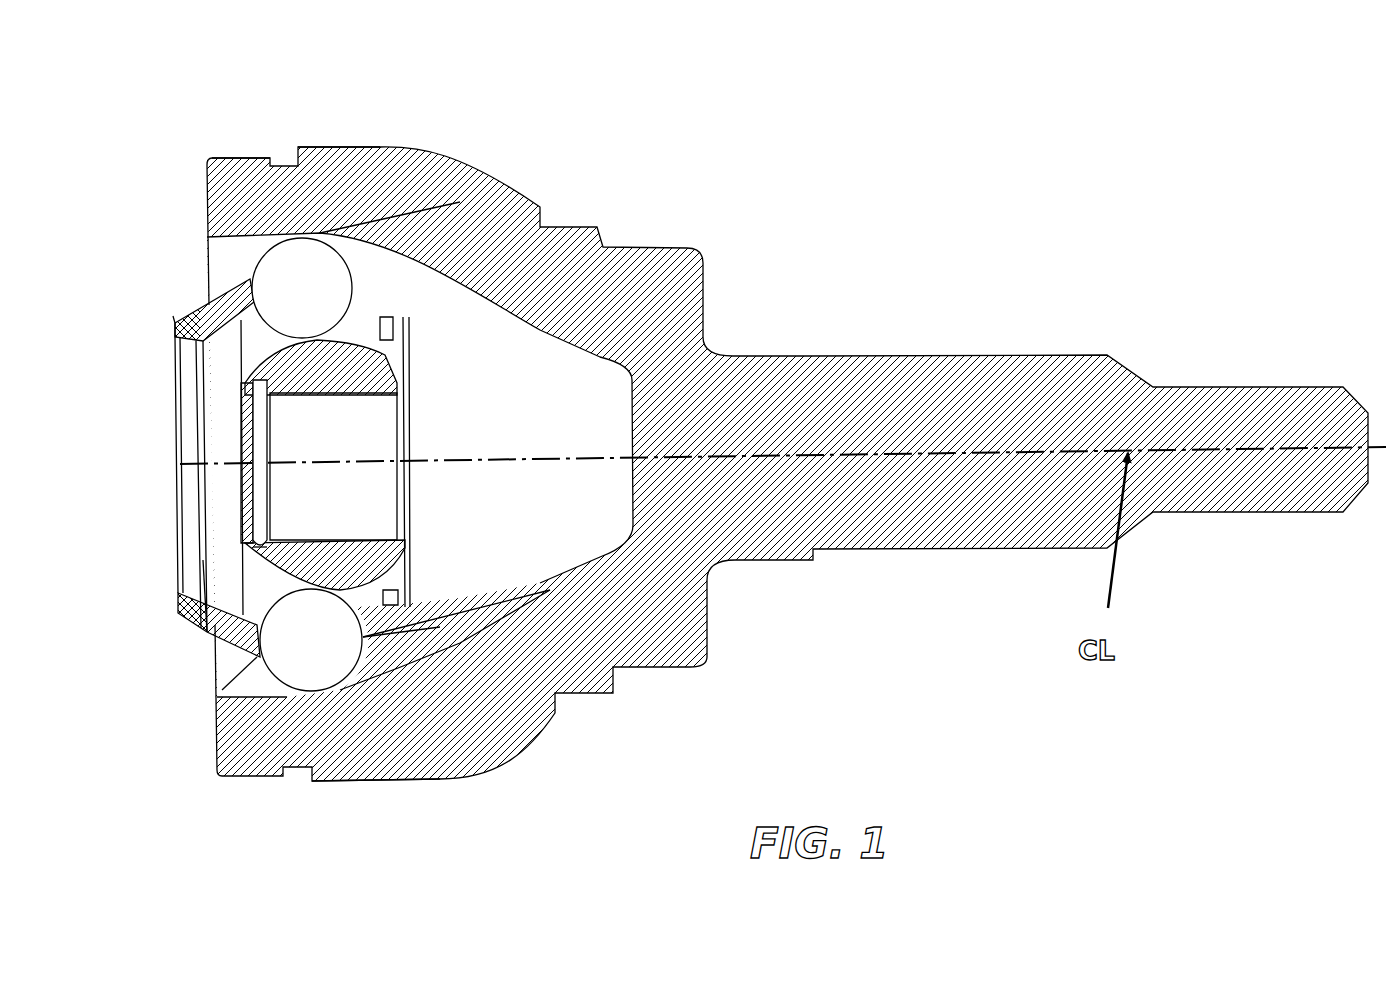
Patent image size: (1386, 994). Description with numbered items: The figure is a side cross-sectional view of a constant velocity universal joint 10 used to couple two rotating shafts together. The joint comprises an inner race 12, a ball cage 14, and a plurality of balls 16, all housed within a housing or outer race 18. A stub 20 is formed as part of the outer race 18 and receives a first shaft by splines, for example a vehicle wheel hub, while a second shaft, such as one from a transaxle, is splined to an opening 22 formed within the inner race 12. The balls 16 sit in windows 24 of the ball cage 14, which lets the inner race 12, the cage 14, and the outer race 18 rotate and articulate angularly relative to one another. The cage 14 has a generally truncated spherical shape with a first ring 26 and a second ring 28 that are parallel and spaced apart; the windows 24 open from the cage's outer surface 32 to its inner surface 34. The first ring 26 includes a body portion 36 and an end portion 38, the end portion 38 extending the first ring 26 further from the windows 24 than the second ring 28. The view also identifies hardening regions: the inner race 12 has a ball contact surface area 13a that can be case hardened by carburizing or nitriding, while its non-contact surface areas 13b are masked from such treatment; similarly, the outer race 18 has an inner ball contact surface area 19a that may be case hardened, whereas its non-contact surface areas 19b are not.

The constant velocity universal joint 10 is at (658, 160).
The inner race 12 is at (405, 352).
The ball contact surface area 13a is at (363, 607).
The non-contact surface areas 13b is at (303, 537).
The ball cage 14 is at (200, 297).
The balls 16 is at (490, 188).
The outer race 18 is at (233, 160).
The inner ball contact surface area 19a is at (253, 686).
The non-contact surface areas 19b is at (340, 140).
The stub 20 is at (1017, 530).
The opening 22 is at (317, 537).
The windows 24 is at (207, 357).
The first ring 26 is at (200, 633).
The second ring 28 is at (395, 645).
The outer surface 32 is at (257, 655).
The inner surface 34 is at (227, 587).
The body portion 36 is at (232, 282).
The end portion 38 is at (173, 316).